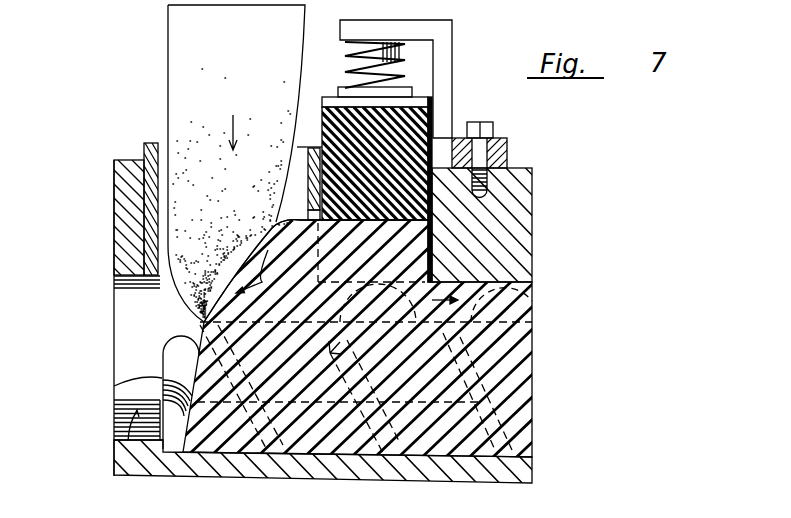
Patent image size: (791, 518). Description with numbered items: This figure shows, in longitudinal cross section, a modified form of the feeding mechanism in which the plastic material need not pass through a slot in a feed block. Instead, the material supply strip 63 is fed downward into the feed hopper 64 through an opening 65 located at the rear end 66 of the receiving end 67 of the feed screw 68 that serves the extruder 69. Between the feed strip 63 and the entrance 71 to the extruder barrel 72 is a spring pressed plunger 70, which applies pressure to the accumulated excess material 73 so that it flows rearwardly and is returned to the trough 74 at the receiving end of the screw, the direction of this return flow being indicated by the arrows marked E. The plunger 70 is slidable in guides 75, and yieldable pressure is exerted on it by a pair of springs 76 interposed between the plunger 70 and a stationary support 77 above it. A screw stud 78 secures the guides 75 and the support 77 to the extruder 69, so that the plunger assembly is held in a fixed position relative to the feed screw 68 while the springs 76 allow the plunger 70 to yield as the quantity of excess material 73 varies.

The material supply strip 63 is at (177, 47).
The feed hopper 64 is at (125, 170).
The opening 65 is at (160, 143).
The rear end 66 is at (114, 386).
The receiving end 67 is at (183, 466).
The feed screw 68 is at (367, 477).
The extruder 69 is at (110, 251).
The spring pressed plunger 70 is at (418, 124).
The entrance 71 is at (457, 278).
The extruder barrel 72 is at (532, 291).
The accumulated excess material 73 is at (385, 240).
The trough 74 is at (300, 454).
The guides 75 is at (308, 197).
The springs 76 is at (408, 60).
The stationary support 77 is at (353, 27).
The screw stud 78 is at (497, 128).